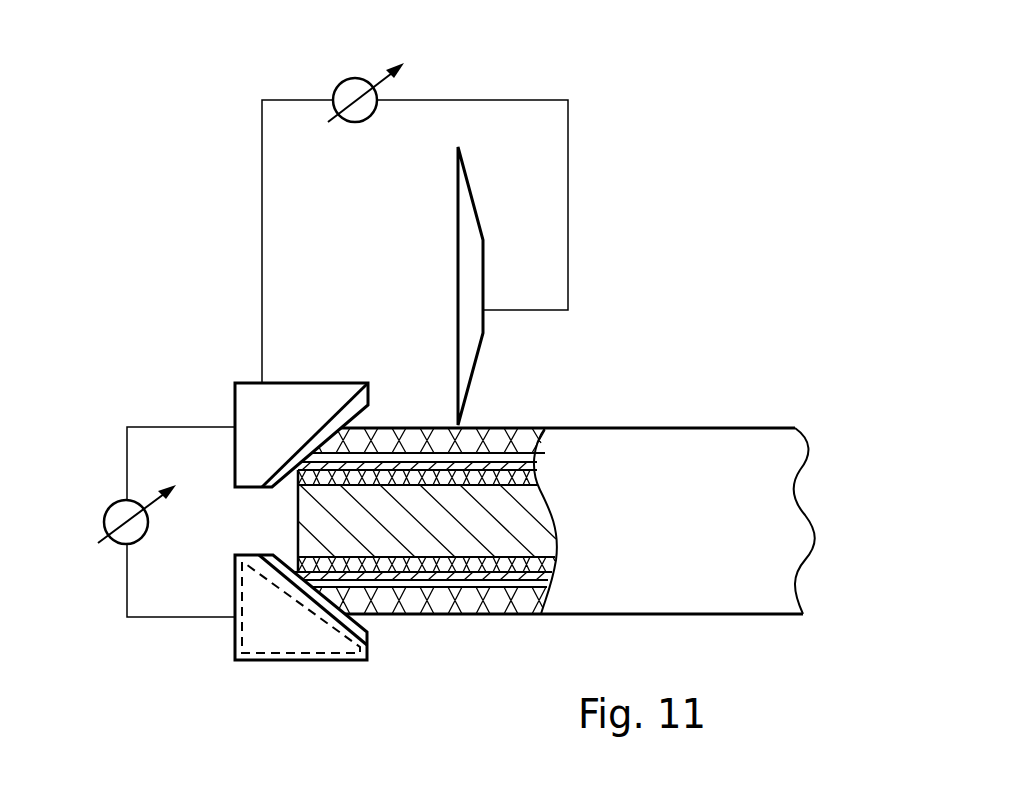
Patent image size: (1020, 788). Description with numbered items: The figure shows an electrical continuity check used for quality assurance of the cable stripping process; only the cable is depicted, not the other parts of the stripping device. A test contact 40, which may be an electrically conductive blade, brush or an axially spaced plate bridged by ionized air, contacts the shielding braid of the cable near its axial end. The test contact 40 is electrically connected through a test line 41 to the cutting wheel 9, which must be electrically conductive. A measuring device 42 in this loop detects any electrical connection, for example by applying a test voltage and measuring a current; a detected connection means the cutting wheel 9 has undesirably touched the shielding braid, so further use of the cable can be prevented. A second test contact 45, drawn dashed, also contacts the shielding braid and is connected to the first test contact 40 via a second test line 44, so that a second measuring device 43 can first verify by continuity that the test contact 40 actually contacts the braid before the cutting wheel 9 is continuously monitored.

The cutting wheel 9 is at (478, 213).
The test contact 40 is at (263, 410).
The test line 41 is at (541, 100).
The measuring device 42 is at (338, 82).
The second measuring device 43 is at (113, 507).
The second test line 44 is at (142, 618).
The second test contact 45 is at (263, 616).